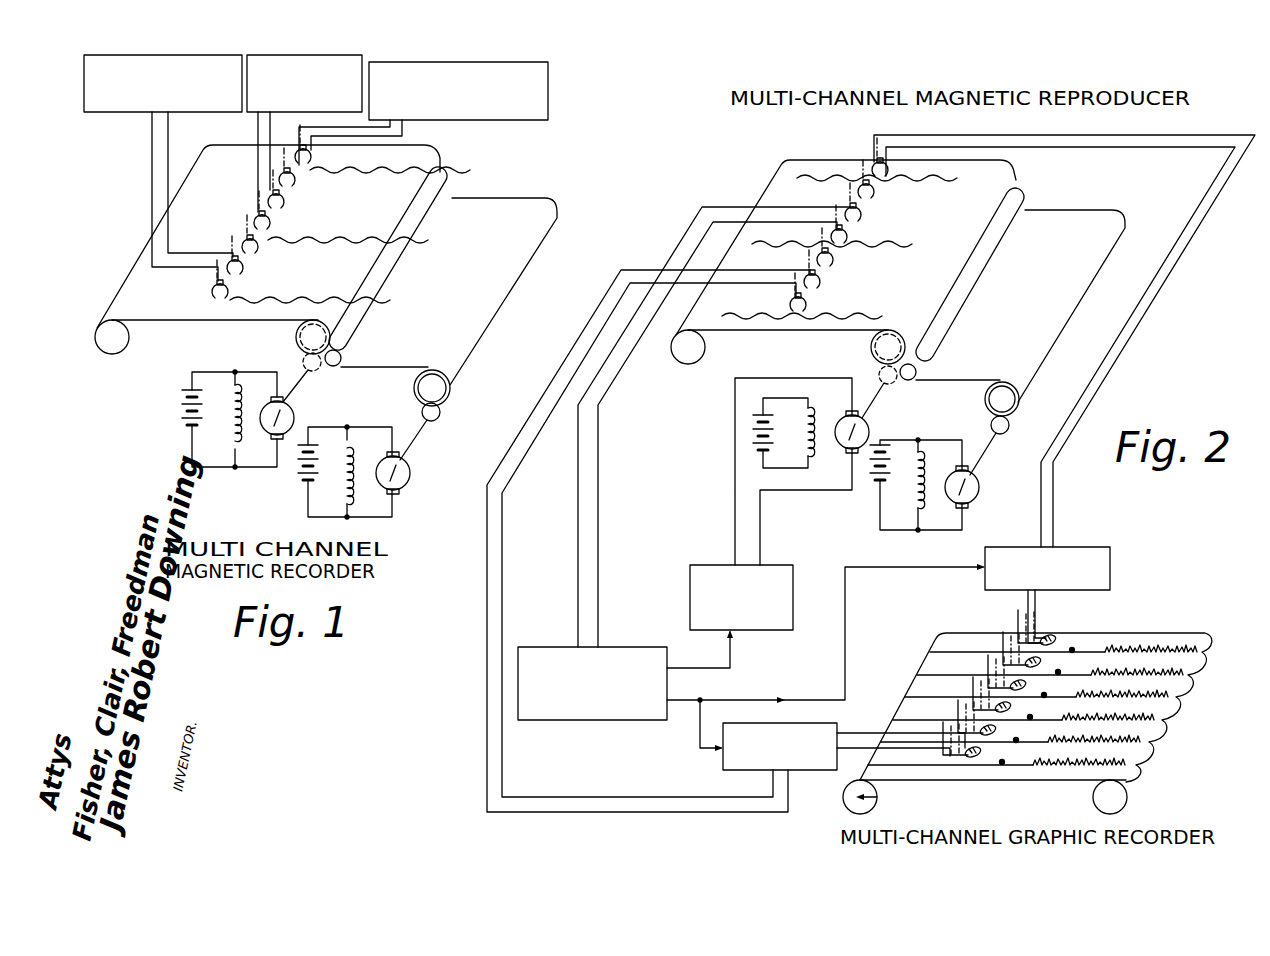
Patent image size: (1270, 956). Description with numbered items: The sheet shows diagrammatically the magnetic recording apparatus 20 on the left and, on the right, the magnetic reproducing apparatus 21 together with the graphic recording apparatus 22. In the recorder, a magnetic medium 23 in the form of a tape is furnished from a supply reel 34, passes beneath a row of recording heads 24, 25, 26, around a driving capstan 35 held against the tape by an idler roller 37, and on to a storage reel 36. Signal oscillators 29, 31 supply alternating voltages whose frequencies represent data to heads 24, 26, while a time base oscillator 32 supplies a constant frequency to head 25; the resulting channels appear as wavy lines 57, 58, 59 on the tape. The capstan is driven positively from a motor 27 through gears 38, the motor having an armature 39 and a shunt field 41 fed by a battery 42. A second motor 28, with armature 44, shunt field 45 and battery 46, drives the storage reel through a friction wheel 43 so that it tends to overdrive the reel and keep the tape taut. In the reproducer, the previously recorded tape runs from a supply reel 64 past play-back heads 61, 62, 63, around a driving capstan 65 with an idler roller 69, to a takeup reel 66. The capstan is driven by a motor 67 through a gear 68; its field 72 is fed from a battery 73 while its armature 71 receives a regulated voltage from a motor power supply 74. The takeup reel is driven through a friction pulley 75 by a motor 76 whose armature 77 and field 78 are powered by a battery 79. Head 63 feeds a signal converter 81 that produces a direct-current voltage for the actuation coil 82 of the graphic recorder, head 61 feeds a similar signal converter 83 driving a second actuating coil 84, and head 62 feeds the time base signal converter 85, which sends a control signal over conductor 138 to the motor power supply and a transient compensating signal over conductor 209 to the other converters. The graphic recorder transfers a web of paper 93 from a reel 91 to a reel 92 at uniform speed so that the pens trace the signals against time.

In FIG. 1, the signal oscillator 29 is at (150, 55).
In FIG. 1, the time base oscillator 32 is at (290, 55).
In FIG. 1, the signal oscillator 31 is at (538, 62).
In FIG. 1, the recording head 26 is at (312, 158).
In FIG. 1, the recording head 25 is at (271, 226).
In FIG. 1, the recording head 24 is at (229, 293).
In FIG. 1, the wavy line 59 is at (372, 172).
In FIG. 2, the wavy line 59 is at (960, 180).
In FIG. 1, the wavy line 58 is at (338, 242).
In FIG. 2, the wavy line 58 is at (912, 246).
In FIG. 1, the wavy line 57 is at (300, 300).
In FIG. 2, the wavy line 57 is at (866, 317).
In FIG. 1, the idler roller 37 is at (448, 180).
In FIG. 1, the magnetic medium 23 is at (186, 318).
In FIG. 2, the magnetic medium 23 is at (761, 330).
In FIG. 1, the driving capstan 35 is at (296, 338).
In FIG. 1, the supply reel 34 is at (108, 348).
In FIG. 1, the magnetic recording apparatus 20 is at (158, 384).
In FIG. 1, the armature 39 is at (277, 401).
In FIG. 1, the motor 27 is at (296, 414).
In FIG. 1, the gears 38 is at (321, 369).
In FIG. 1, the storage reel 36 is at (438, 388).
In FIG. 1, the wheel 43 is at (440, 412).
In FIG. 1, the battery 42 is at (180, 423).
In FIG. 1, the shunt field 41 is at (227, 442).
In FIG. 1, the shunt field 45 is at (353, 447).
In FIG. 1, the motor 28 is at (413, 457).
In FIG. 1, the armature 44 is at (407, 475).
In FIG. 1, the battery 46 is at (303, 505).
In FIG. 2, the play-back head 63 is at (890, 169).
In FIG. 2, the play-back head 62 is at (850, 238).
In FIG. 2, the play-back head 61 is at (808, 311).
In FIG. 2, the idler roller 69 is at (1022, 197).
In FIG. 2, the driving capstan 65 is at (871, 347).
In FIG. 2, the gear 68 is at (879, 373).
In FIG. 2, the supply reel 64 is at (678, 355).
In FIG. 2, the field 72 is at (812, 418).
In FIG. 2, the motor 67 is at (870, 428).
In FIG. 2, the takeup reel 66 is at (995, 395).
In FIG. 2, the friction pulley 75 is at (1010, 425).
In FIG. 2, the battery 73 is at (777, 433).
In FIG. 2, the armature 71 is at (843, 450).
In FIG. 2, the field 78 is at (920, 480).
In FIG. 2, the motor 76 is at (981, 486).
In FIG. 2, the armature 77 is at (975, 495).
In FIG. 2, the magnetic reproducing apparatus 21 is at (707, 392).
In FIG. 2, the battery 79 is at (882, 495).
In FIG. 2, the motor power supply unit 74 is at (776, 565).
In FIG. 2, the signal converter 81 is at (1072, 547).
In FIG. 2, the graphic recording apparatus 22 is at (1152, 592).
In FIG. 2, the conductor 138 is at (735, 666).
In FIG. 2, the conductor 209 is at (690, 700).
In FIG. 2, the actuation coil 82 is at (1050, 638).
In FIG. 2, the signal converter 85 is at (606, 721).
In FIG. 2, the signal converter 83 is at (812, 770).
In FIG. 2, the reel 91 is at (880, 787).
In FIG. 2, the actuating coil 84 is at (960, 757).
In FIG. 2, the web of paper 93 is at (993, 783).
In FIG. 2, the reel 92 is at (1093, 797).